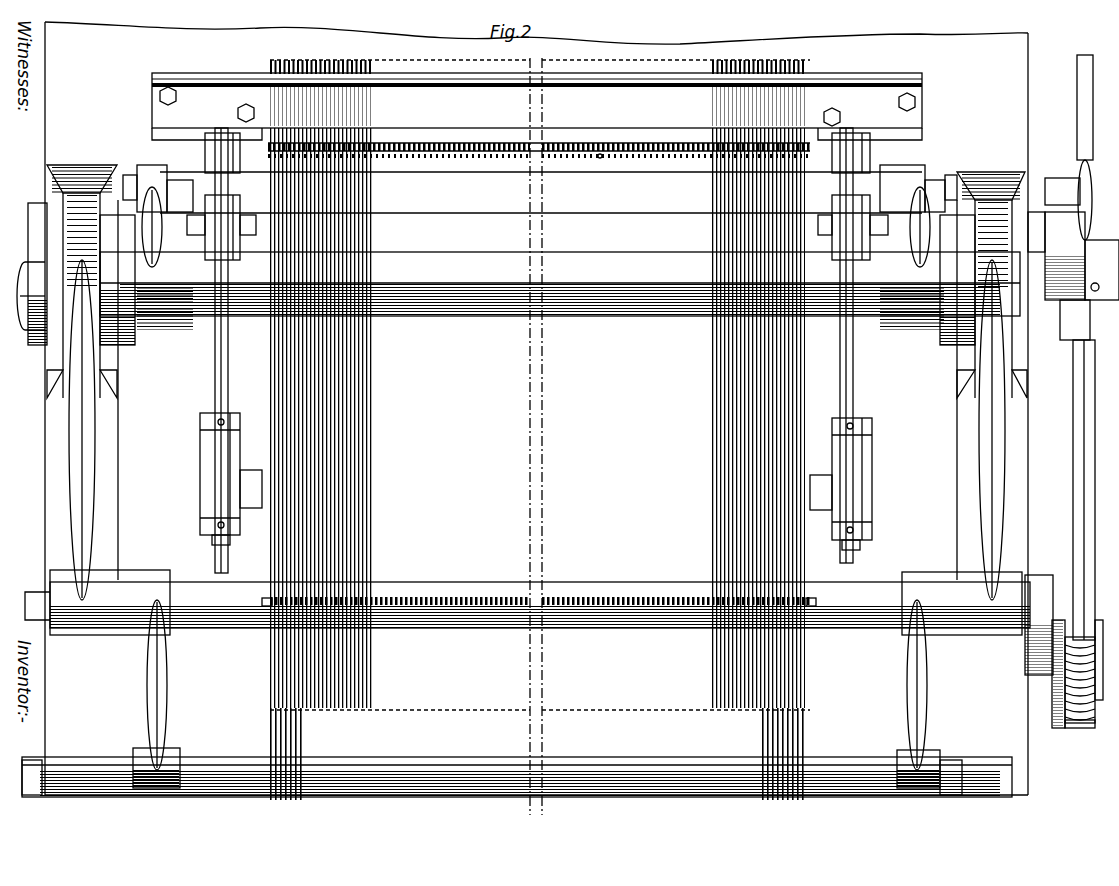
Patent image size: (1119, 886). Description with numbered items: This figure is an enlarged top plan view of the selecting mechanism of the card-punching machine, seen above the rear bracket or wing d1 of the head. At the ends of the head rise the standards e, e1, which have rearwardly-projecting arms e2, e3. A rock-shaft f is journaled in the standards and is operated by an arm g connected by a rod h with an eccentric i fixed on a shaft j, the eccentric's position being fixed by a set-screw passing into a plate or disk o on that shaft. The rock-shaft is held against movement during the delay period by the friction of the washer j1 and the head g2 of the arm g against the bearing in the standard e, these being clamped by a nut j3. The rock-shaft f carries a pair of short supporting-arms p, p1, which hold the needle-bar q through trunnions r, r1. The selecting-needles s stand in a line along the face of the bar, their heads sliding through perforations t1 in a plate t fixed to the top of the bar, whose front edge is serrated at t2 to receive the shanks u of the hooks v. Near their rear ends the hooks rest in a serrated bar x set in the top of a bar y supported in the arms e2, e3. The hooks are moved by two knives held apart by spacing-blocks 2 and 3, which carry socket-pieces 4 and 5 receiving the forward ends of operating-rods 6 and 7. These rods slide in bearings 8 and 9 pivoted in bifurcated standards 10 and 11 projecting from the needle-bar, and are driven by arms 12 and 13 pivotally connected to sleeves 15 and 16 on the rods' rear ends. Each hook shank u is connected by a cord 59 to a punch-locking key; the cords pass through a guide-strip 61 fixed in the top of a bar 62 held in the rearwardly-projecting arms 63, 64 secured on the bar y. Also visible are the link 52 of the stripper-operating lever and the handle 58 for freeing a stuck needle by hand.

The bracket or wing d1 is at (920, 52).
The hook v is at (268, 64).
The shank of hook u is at (345, 392).
The cord 59 is at (762, 732).
The serrated edge of plate t2 is at (420, 146).
The perforation t1 is at (495, 158).
The plate t is at (658, 170).
The needle-bar q is at (541, 204).
The selecting-needle s is at (636, 160).
The rock-shaft f is at (488, 312).
The standard e1 is at (72, 182).
The spacing-block 2 is at (165, 166).
The trunnion r1 is at (130, 175).
The supporting-arm p1 is at (158, 236).
The rearwardly-projecting arm e3 is at (70, 462).
The operating-rod 6 is at (214, 345).
The socket-piece 4 is at (222, 153).
The bearing 8 is at (222, 227).
The bifurcated standard 10 is at (197, 218).
The sleeve 15 is at (220, 479).
The arm 12 is at (252, 508).
The operating-rod 7 is at (846, 362).
The socket-piece 5 is at (851, 153).
The bearing 9 is at (851, 227).
The bifurcated standard 11 is at (878, 218).
The sleeve 16 is at (852, 484).
The arm 13 is at (822, 510).
The spacing-block 3 is at (892, 132).
The supporting-arm p is at (912, 232).
The trunnion r is at (955, 180).
The standard e is at (990, 185).
The washer j1 is at (954, 280).
The rearwardly-projecting arm e2 is at (980, 475).
The head of arm g2 is at (1062, 256).
The nut j3 is at (1102, 270).
The arm g is at (1068, 330).
The handle 58 is at (1080, 147).
The link 52 is at (1068, 190).
The rod h is at (1075, 415).
The serrated bar x is at (255, 598).
The bar y is at (240, 616).
The rearwardly-projecting arm 63 is at (150, 678).
The rearwardly-projecting arm 64 is at (912, 680).
The guide-strip 61 is at (385, 772).
The bar 62 is at (572, 765).
The shaft j is at (1088, 638).
The plate or disk o is at (1052, 690).
The eccentric i is at (1075, 726).